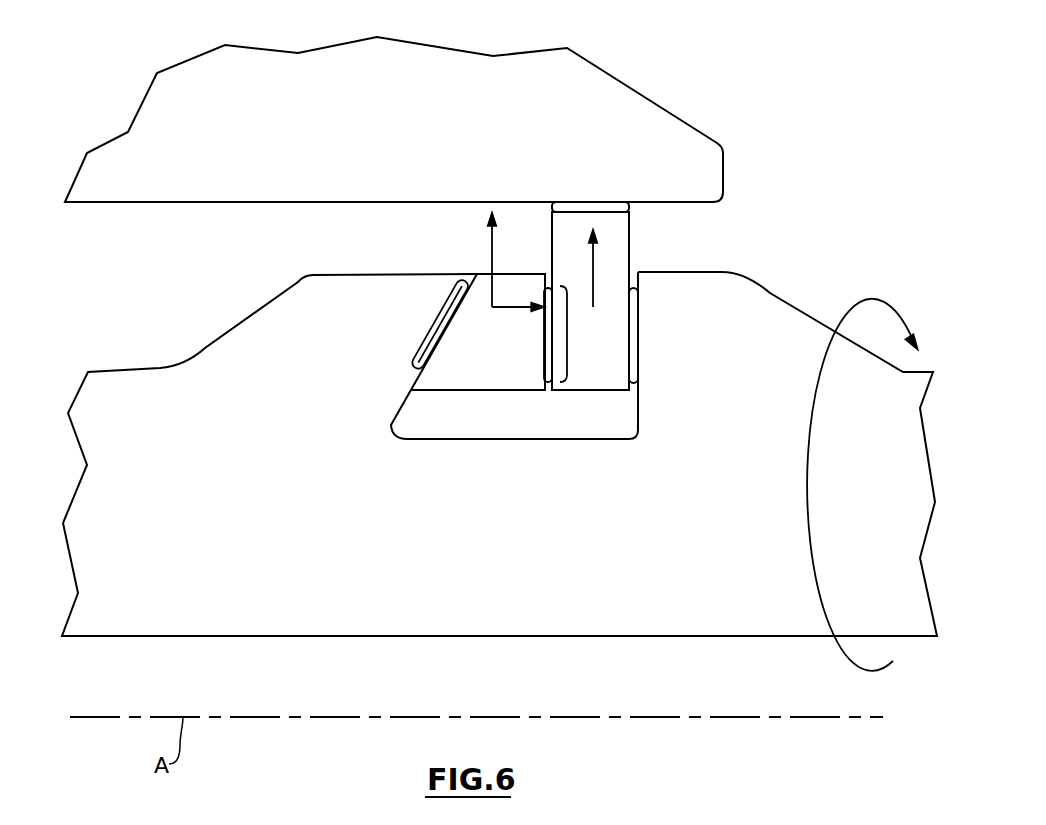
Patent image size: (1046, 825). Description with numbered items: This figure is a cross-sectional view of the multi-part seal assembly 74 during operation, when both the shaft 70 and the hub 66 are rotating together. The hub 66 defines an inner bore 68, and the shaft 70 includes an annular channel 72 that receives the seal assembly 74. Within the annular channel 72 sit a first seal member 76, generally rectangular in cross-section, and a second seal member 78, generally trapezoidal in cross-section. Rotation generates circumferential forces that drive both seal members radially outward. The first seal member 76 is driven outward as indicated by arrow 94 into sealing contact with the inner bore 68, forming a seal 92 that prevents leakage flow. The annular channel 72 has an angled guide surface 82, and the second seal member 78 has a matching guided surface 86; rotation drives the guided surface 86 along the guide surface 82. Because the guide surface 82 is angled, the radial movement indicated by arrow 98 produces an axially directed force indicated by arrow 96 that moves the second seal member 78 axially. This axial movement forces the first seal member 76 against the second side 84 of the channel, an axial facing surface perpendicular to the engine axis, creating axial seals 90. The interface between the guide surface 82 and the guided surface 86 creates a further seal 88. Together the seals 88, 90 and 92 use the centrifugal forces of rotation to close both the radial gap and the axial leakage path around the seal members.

The hub 66 is at (632, 112).
The inner bore 68 is at (160, 215).
The shaft 70 is at (798, 597).
The annular channel 72 is at (555, 428).
The multi-part seal assembly 74 is at (759, 229).
The first seal member 76 is at (615, 367).
The second seal member 78 is at (465, 374).
The guide surface 82 is at (438, 377).
The second side 84 is at (627, 417).
The guided surface 86 is at (460, 274).
The seal 88 is at (428, 327).
The axial seals 90 is at (568, 335).
The seal 92 is at (654, 218).
The arrow 94 is at (593, 268).
The arrow 96 is at (512, 307).
The arrow 98 is at (492, 243).